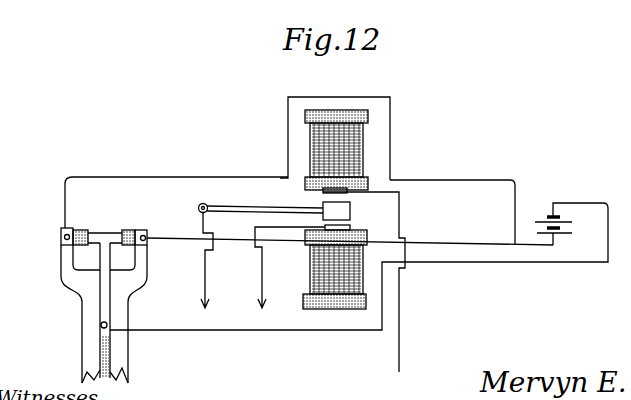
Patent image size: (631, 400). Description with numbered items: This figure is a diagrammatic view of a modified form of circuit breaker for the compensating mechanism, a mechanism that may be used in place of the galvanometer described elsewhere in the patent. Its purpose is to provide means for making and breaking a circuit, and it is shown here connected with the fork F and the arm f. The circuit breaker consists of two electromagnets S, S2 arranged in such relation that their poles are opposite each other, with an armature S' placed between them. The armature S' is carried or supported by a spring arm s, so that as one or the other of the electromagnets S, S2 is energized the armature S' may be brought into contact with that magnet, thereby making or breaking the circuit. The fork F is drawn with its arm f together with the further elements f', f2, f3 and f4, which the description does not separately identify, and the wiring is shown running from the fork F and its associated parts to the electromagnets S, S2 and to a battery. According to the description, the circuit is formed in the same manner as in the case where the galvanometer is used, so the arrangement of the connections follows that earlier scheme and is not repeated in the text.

The electromagnet S is at (335, 145).
The armature S' is at (348, 211).
The electromagnet S2 is at (308, 271).
The spring arm s is at (245, 212).
The fork F is at (97, 291).
The arm f is at (130, 310).
The cross bar f' is at (105, 226).
The contact block f2 is at (133, 231).
The left fork arm f3 is at (62, 265).
The right fork arm f4 is at (180, 260).